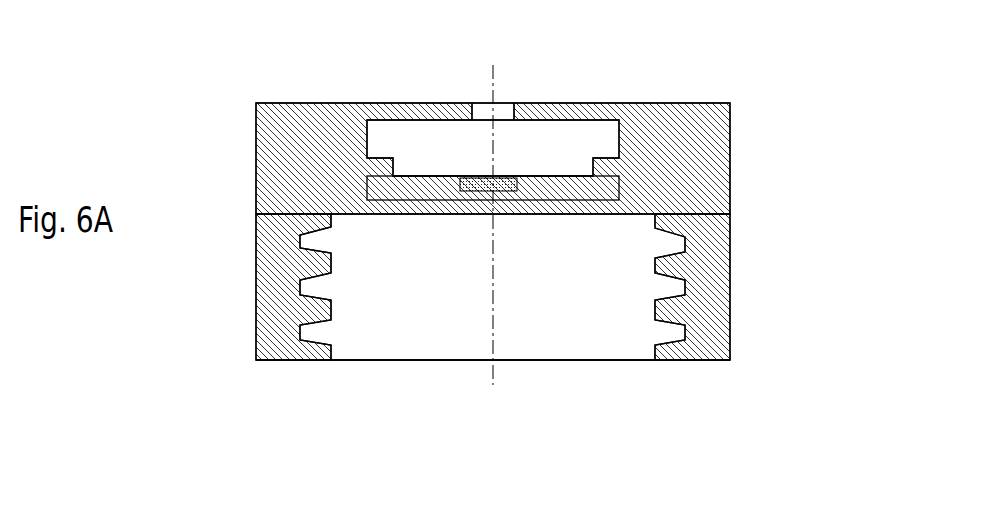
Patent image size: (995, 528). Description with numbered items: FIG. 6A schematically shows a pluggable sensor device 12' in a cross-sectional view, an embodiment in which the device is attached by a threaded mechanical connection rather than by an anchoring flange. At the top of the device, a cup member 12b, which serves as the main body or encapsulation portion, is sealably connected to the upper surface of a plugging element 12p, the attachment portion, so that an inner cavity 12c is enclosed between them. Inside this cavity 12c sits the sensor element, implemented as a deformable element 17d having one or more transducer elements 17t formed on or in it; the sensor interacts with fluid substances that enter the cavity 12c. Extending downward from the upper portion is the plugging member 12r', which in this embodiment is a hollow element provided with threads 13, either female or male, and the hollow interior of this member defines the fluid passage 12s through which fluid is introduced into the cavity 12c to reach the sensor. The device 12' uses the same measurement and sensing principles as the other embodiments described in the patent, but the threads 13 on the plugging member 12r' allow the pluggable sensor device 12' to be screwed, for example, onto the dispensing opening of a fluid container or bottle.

The pluggable sensor device 12' is at (436, 215).
The cup member 12b is at (652, 132).
The plugging element 12p is at (492, 106).
The inner cavity 12c is at (432, 145).
The transducer element 17t is at (480, 187).
The deformable element 17d is at (519, 193).
The plugging member 12r' is at (401, 287).
The fluid passage 12s is at (385, 320).
The threads 13 is at (308, 358).